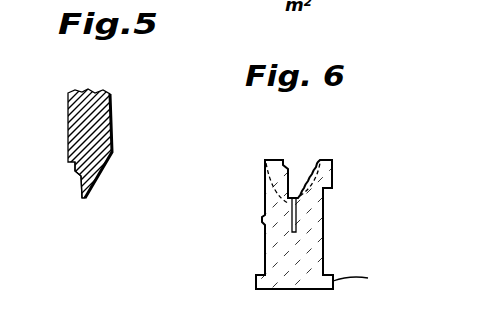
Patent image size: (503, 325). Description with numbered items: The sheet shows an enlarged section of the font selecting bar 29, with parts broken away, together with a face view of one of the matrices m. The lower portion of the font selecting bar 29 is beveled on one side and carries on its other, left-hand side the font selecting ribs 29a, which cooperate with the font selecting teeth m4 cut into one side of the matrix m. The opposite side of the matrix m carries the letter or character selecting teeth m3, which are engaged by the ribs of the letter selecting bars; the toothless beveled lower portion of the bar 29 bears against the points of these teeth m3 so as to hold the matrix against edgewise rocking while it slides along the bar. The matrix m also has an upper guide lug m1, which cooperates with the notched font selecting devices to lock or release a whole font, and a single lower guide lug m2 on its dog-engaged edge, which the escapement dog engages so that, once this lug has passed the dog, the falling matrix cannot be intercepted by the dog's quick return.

In FIG. 5, the font selecting bar 29 is at (100, 128).
In FIG. 5, the font selecting ribs 29a is at (76, 172).
In FIG. 6, the matrix m is at (323, 242).
In FIG. 6, the upper guide lug m1 is at (333, 180).
In FIG. 6, the lower guide lug m2 is at (257, 281).
In FIG. 6, the letter or character selecting teeth m3 is at (309, 170).
In FIG. 6, the font selecting teeth m4 is at (284, 166).